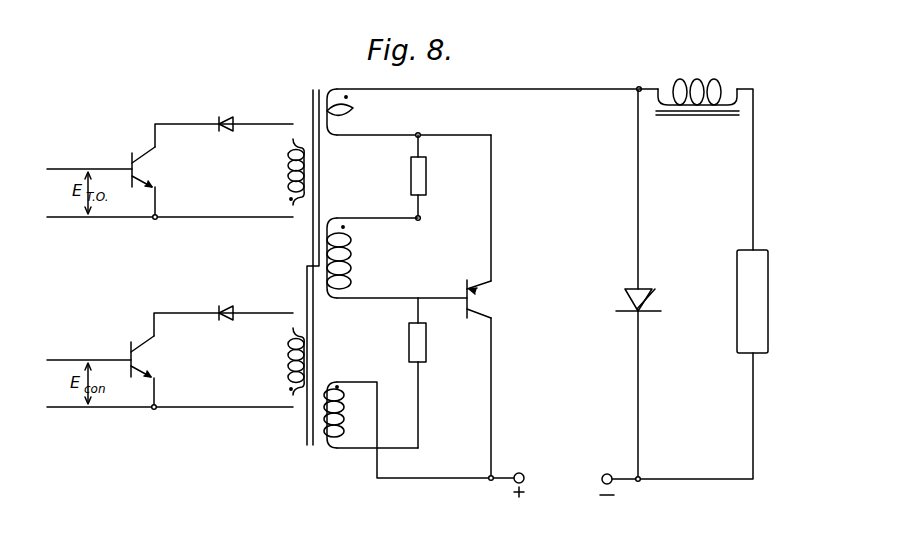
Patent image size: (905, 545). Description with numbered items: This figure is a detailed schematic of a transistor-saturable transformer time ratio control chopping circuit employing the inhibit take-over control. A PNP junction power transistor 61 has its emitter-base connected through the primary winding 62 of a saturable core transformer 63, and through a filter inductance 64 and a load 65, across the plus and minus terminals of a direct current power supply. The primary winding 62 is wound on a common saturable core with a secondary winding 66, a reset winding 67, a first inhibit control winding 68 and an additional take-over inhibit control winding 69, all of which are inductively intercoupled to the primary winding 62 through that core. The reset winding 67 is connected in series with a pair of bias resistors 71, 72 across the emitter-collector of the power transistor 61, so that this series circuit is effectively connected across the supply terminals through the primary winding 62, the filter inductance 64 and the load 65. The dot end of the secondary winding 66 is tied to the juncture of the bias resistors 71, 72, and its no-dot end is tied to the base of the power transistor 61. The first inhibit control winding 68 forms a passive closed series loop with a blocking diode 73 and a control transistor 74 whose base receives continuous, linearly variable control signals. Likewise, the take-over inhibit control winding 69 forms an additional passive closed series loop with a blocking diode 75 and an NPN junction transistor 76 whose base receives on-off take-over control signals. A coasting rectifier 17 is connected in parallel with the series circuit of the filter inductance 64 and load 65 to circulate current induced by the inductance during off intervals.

The coasting rectifier 17 is at (652, 297).
The PNP junction power transistor 61 is at (467, 285).
The primary winding 62 is at (354, 108).
The saturable core transformer 63 is at (321, 209).
The filter inductance 64 is at (686, 79).
The load 65 is at (768, 290).
The secondary winding 66 is at (352, 250).
The reset winding 67 is at (350, 407).
The first inhibit control winding 68 is at (284, 365).
The take-over inhibit control winding 69 is at (286, 172).
The bias resistor 71 is at (426, 175).
The bias resistor 72 is at (426, 343).
The blocking diode 73 is at (224, 305).
The control transistor 74 is at (131, 342).
The blocking diode 75 is at (224, 114).
The NPN junction transistor 76 is at (131, 153).